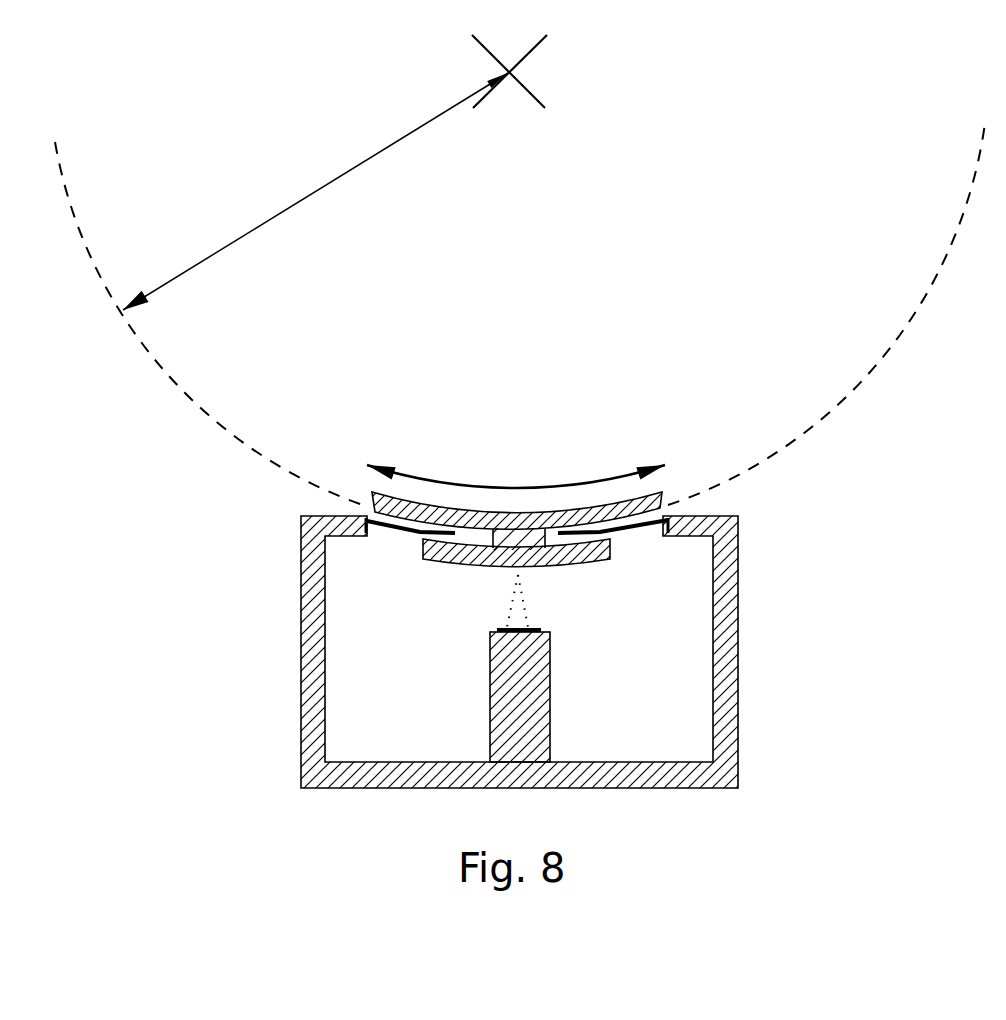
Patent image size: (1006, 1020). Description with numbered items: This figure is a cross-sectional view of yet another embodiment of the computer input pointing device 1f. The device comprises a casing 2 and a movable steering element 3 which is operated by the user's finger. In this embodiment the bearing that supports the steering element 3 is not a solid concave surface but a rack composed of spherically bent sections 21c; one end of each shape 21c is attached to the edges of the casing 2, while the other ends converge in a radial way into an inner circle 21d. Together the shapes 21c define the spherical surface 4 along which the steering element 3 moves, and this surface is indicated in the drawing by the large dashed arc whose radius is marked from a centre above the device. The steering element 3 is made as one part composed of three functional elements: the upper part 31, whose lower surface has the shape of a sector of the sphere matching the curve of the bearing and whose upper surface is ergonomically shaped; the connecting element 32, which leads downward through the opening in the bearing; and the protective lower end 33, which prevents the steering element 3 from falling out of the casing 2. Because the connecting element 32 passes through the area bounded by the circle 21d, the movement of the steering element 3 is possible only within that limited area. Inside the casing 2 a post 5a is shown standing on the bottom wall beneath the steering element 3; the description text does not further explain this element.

The input pointing device 1f is at (518, 433).
The casing 2 is at (693, 768).
The steering element 3 is at (504, 576).
The spherical surface 4 is at (320, 489).
The light source pedestal 5a is at (522, 733).
The spherically bent sections 21c is at (458, 534).
The circle 21d is at (423, 542).
The upper part 31 is at (610, 513).
The connecting element 32 is at (520, 543).
The protective lower end 33 is at (562, 562).